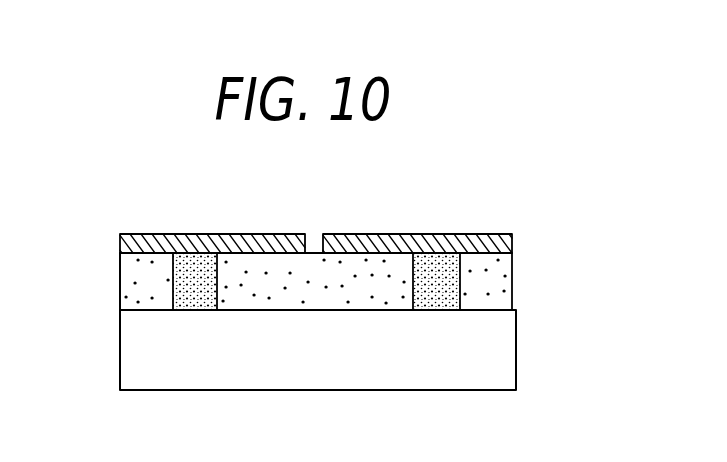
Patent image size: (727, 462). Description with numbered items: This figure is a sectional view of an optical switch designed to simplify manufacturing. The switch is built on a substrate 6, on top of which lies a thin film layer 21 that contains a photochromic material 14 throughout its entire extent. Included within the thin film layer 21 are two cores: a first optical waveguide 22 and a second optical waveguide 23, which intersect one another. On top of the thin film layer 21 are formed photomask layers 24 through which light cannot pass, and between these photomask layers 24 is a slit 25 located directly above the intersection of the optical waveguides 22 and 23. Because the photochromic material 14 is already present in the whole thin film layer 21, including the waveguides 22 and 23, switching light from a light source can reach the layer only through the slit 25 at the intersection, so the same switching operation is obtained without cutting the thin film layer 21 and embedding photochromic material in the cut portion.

The substrate 6 is at (455, 372).
The photochromic material 14 is at (143, 280).
The thin film layer 21 is at (500, 280).
The first optical waveguide 22 is at (192, 262).
The second optical waveguide 23 is at (435, 258).
The photomask layers 24 is at (255, 235).
The slit 25 is at (313, 233).